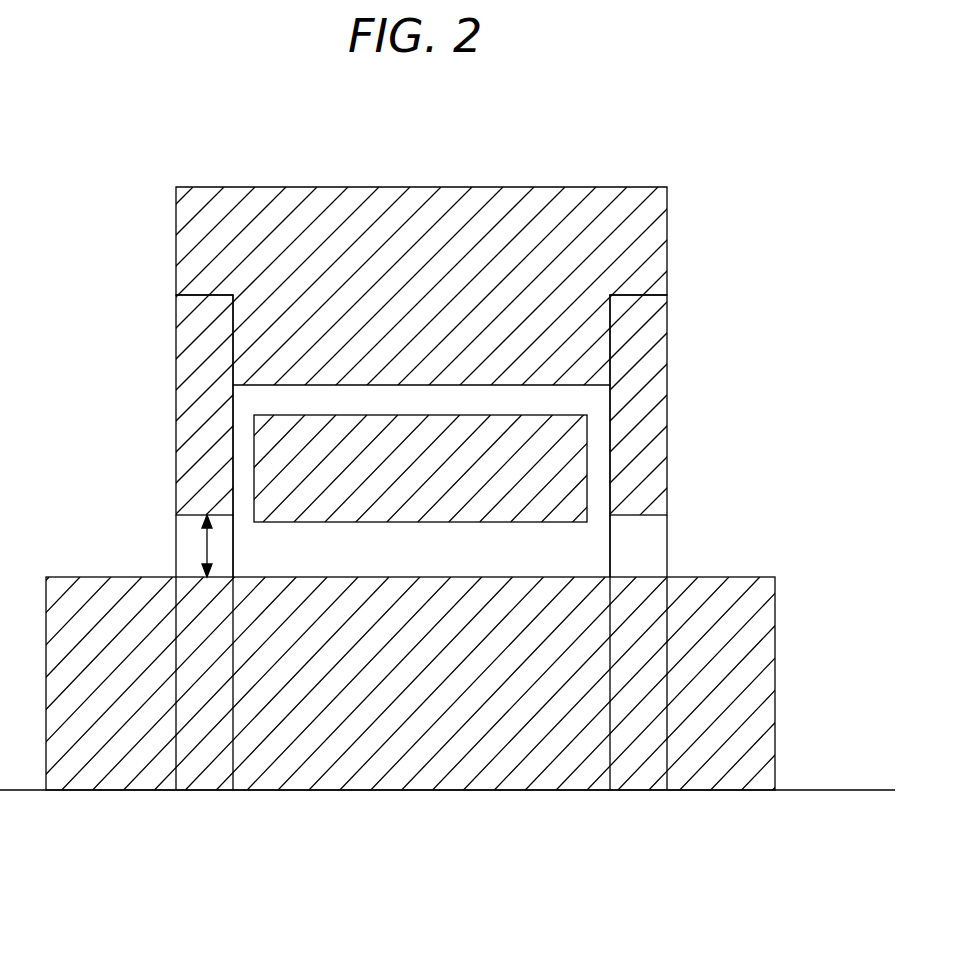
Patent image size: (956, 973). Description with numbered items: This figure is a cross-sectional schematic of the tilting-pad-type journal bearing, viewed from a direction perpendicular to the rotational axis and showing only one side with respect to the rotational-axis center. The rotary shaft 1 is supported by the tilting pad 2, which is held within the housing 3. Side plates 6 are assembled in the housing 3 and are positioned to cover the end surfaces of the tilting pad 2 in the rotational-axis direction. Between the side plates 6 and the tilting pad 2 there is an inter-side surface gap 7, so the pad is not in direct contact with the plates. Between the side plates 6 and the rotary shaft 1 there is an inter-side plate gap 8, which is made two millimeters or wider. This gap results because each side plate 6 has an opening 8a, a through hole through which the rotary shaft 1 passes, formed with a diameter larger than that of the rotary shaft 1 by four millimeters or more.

The rotary shaft 1 is at (767, 683).
The tilting pad 2 is at (565, 455).
The housing 3 is at (575, 197).
The side plate 6 is at (183, 347).
The inter-side surface gap 7 is at (243, 448).
The inter-side plate gap 8 is at (190, 547).
The opening 8a is at (632, 516).